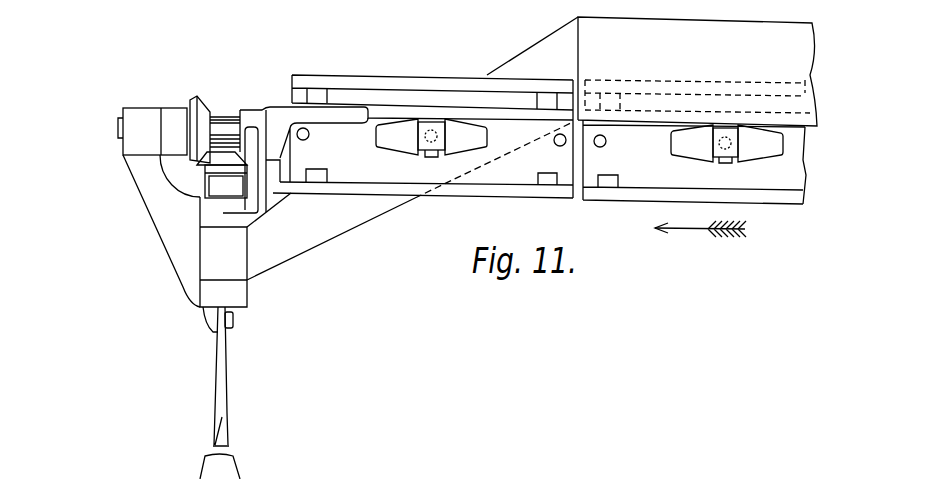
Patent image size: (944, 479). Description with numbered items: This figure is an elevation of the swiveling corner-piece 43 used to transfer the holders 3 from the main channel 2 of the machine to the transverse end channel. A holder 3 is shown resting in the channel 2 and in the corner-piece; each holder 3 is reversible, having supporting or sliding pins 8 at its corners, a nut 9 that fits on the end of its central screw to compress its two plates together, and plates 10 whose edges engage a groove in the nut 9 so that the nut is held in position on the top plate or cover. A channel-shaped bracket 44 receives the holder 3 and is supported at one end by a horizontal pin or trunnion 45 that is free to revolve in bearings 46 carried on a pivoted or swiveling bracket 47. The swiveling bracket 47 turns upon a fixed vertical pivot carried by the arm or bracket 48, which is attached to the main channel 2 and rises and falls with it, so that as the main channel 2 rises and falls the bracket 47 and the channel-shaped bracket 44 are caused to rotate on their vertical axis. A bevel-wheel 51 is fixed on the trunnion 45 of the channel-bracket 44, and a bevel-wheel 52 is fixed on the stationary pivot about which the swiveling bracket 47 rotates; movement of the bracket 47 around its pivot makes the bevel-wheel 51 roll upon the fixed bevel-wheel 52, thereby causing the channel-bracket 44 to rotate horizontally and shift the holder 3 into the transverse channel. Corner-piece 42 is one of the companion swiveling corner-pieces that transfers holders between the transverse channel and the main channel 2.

The main channel 2 is at (697, 71).
The holder 3 is at (539, 139).
The supporting or sliding pin 8 is at (547, 183).
The nut 9 is at (432, 152).
The plate 10 is at (579, 140).
The swiveling corner-piece 42 is at (243, 466).
The swiveling corner-piece 43 is at (277, 373).
The channel-shaped bracket 44 is at (287, 120).
The horizontal pin or trunnion 45 is at (223, 117).
The bearing 46 is at (152, 131).
The pivoted or swiveling bracket 47 is at (161, 231).
The arm or bracket 48 is at (389, 162).
The bevel-wheel 51 is at (195, 114).
The bevel-wheel 52 is at (212, 158).